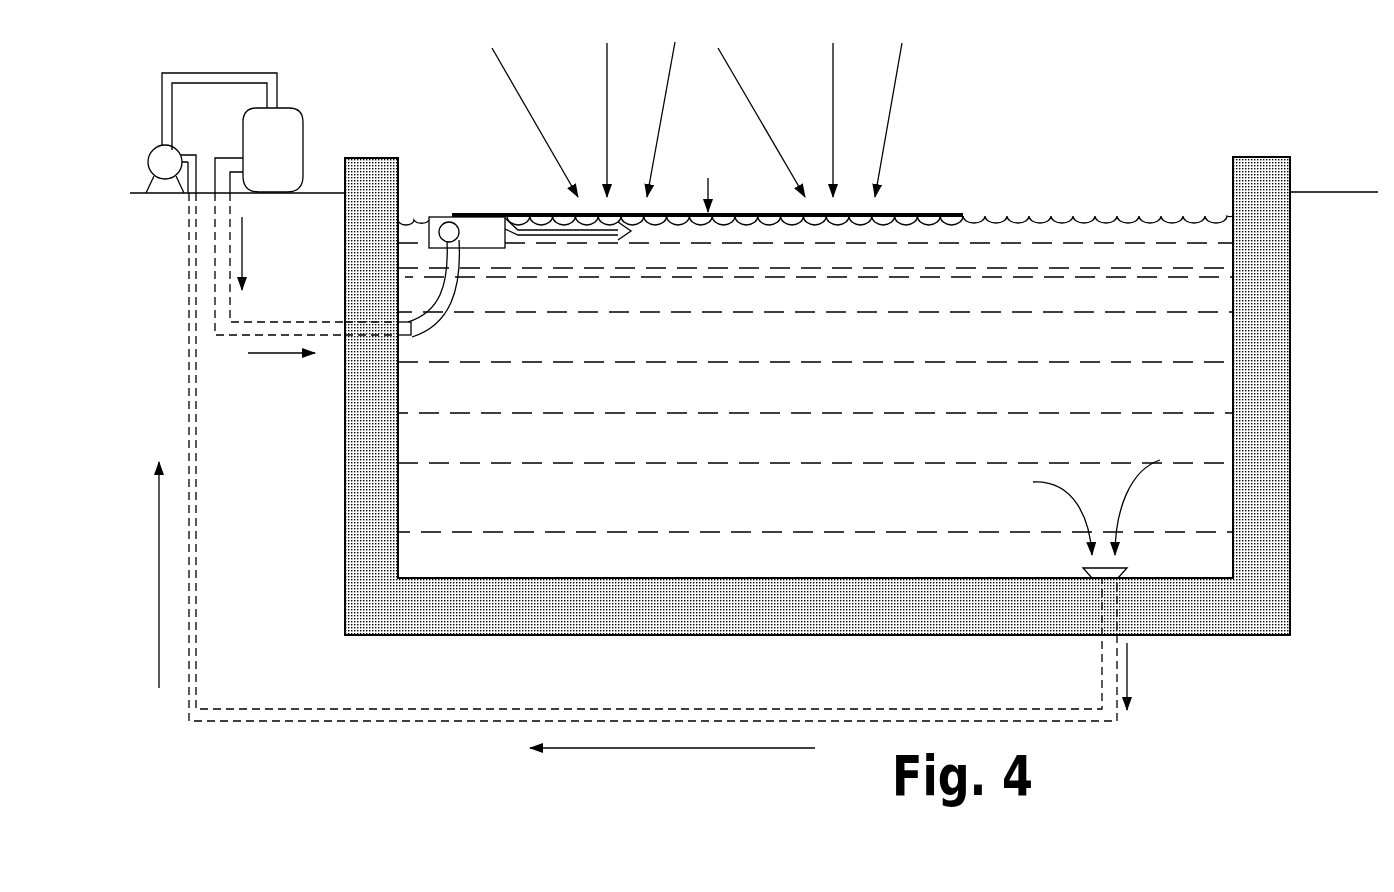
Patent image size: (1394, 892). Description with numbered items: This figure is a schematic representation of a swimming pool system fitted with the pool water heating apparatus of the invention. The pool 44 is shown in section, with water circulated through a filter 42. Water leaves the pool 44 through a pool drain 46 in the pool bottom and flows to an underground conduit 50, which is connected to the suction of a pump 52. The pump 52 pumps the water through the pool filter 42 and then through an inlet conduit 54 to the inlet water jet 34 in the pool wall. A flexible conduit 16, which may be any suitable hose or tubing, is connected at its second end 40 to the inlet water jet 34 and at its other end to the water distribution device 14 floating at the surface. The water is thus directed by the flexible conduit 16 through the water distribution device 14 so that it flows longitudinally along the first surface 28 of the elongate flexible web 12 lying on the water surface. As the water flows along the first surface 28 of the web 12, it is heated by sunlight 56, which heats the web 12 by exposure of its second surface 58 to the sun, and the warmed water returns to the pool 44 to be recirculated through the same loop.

The elongate flexible web 12 is at (718, 208).
The water distribution device 14 is at (490, 215).
The flexible conduit 16 is at (455, 289).
The first surface 28 is at (750, 223).
The inlet water jet 34 is at (400, 334).
The second end 40 is at (414, 339).
The filter 42 is at (280, 161).
The pool 44 is at (1262, 175).
The pool drain 46 is at (1122, 572).
The underground conduit 50 is at (247, 712).
The pump 52 is at (154, 173).
The inlet conduit 54 is at (270, 325).
The sunlight 56 is at (697, 119).
The second surface 58 is at (707, 183).